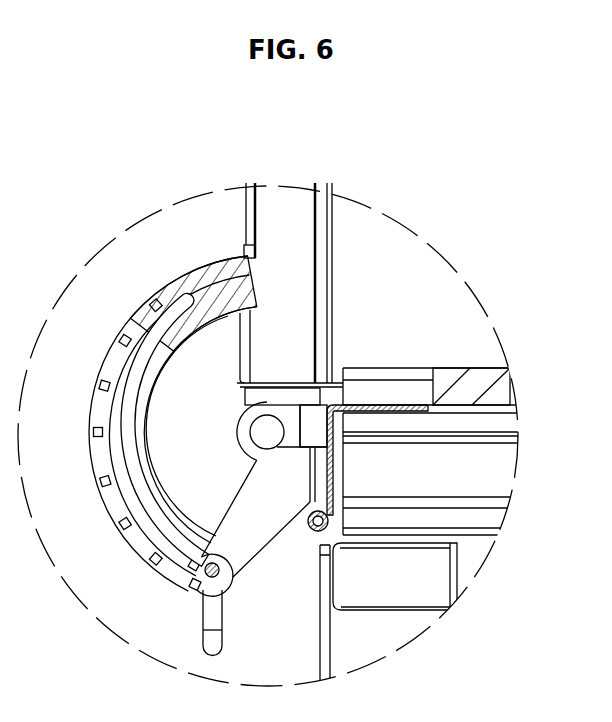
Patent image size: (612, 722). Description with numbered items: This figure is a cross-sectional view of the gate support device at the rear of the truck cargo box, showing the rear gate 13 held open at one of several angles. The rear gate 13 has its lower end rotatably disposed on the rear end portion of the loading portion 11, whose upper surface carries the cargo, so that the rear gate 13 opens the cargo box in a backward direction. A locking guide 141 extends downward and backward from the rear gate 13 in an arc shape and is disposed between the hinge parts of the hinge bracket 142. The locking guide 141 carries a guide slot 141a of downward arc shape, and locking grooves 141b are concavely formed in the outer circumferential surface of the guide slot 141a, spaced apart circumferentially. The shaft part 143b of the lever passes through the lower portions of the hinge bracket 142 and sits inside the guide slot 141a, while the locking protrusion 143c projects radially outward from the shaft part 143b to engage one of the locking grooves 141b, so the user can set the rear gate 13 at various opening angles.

The loading portion 11 is at (497, 380).
The rear gate 13 is at (303, 250).
The locking guide 141 is at (157, 298).
The guide slot 141a is at (117, 405).
The locking grooves 141b is at (112, 470).
The hinge bracket 142 is at (283, 490).
The shaft part 143b is at (234, 592).
The locking protrusion 143c is at (172, 572).